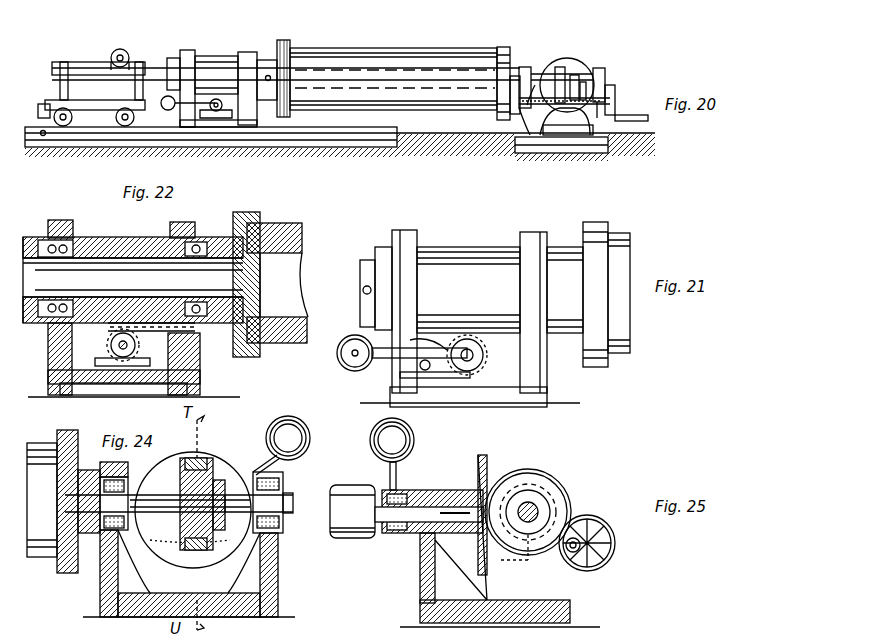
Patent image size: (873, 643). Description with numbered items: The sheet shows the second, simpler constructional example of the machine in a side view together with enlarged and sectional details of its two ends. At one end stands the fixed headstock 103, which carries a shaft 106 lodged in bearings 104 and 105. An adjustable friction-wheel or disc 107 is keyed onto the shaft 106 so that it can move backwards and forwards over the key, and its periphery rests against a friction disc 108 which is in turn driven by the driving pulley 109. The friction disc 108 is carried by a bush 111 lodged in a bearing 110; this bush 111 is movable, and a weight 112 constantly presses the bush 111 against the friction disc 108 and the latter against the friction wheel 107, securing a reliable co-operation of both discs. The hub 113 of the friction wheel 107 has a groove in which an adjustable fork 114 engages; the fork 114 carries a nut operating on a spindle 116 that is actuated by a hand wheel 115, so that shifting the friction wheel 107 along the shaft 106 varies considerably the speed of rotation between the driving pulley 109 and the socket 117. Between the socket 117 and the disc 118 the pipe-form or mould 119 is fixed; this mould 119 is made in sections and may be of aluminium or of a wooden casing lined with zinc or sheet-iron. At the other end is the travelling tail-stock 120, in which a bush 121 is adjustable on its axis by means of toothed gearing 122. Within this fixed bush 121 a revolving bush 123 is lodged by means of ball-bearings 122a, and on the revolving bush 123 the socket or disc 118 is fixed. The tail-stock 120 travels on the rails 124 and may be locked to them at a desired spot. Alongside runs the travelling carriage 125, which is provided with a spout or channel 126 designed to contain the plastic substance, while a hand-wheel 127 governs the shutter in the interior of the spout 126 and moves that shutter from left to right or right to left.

In FIG. 20, the fixed headstock 103 is at (585, 137).
In FIG. 24, the fixed headstock 103 is at (270, 597).
In FIG. 20, the bearing 104 is at (597, 70).
In FIG. 24, the bearing 104 is at (275, 474).
In FIG. 20, the bearing 105 is at (523, 69).
In FIG. 24, the bearing 105 is at (112, 462).
In FIG. 20, the shaft 106 is at (527, 93).
In FIG. 24, the shaft 106 is at (155, 512).
In FIG. 25, the shaft 106 is at (524, 505).
In FIG. 20, the friction-wheel or disc 107 is at (562, 72).
In FIG. 24, the friction-wheel or disc 107 is at (197, 460).
In FIG. 25, the friction-wheel or disc 107 is at (509, 472).
In FIG. 20, the friction disc 108 is at (562, 110).
In FIG. 24, the friction disc 108 is at (217, 455).
In FIG. 25, the friction disc 108 is at (483, 455).
In FIG. 25, the driving pulley 109 is at (337, 535).
In FIG. 25, the bearing 110 is at (427, 535).
In FIG. 25, the bush 111 is at (430, 513).
In FIG. 24, the weight 112 is at (310, 437).
In FIG. 25, the weight 112 is at (378, 437).
In FIG. 20, the hub 113 is at (577, 79).
In FIG. 24, the hub 113 is at (217, 488).
In FIG. 20, the adjustable fork 114 is at (600, 112).
In FIG. 25, the adjustable fork 114 is at (523, 547).
In FIG. 20, the hand wheel 115 is at (617, 100).
In FIG. 25, the hand wheel 115 is at (588, 578).
In FIG. 20, the spindle 116 is at (536, 87).
In FIG. 25, the spindle 116 is at (583, 549).
In FIG. 20, the socket 117 is at (500, 55).
In FIG. 24, the socket 117 is at (62, 567).
In FIG. 20, the disc 118 is at (284, 46).
In FIG. 22, the disc 118 is at (262, 224).
In FIG. 21, the disc 118 is at (597, 366).
In FIG. 20, the pipe-form or mould 119 is at (345, 60).
In FIG. 22, the pipe-form or mould 119 is at (300, 240).
In FIG. 20, the travelling tail-stock 120 is at (223, 66).
In FIG. 22, the travelling tail-stock 120 is at (200, 377).
In FIG. 21, the travelling tail-stock 120 is at (398, 373).
In FIG. 22, the bush 121 is at (103, 234).
In FIG. 21, the bush 121 is at (452, 252).
In FIG. 22, the toothed gearing 122 is at (113, 348).
In FIG. 22, the ball-bearings 122a is at (64, 245).
In FIG. 22, the revolving bush 123 is at (23, 318).
In FIG. 20, the rails 124 is at (332, 141).
In FIG. 20, the travelling carriage 125 is at (86, 108).
In FIG. 20, the spout or channel 126 is at (410, 66).
In FIG. 20, the hand-wheel 127 is at (122, 40).